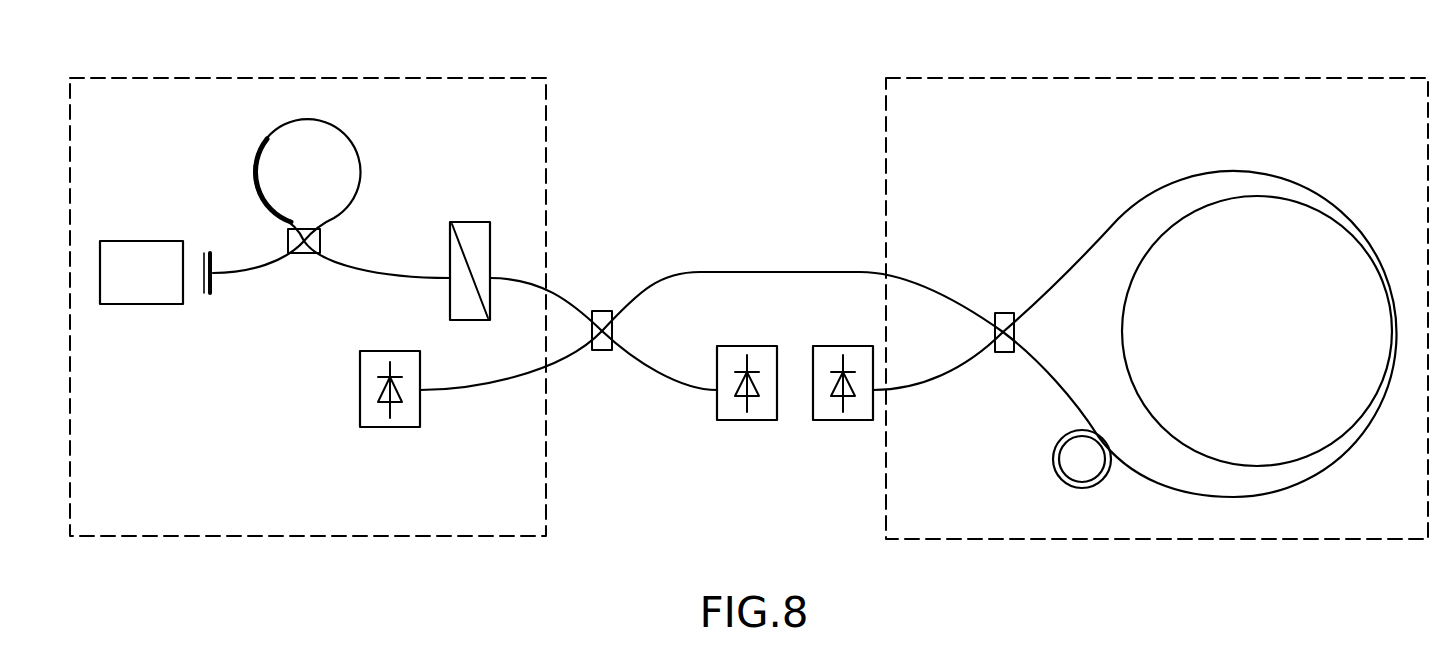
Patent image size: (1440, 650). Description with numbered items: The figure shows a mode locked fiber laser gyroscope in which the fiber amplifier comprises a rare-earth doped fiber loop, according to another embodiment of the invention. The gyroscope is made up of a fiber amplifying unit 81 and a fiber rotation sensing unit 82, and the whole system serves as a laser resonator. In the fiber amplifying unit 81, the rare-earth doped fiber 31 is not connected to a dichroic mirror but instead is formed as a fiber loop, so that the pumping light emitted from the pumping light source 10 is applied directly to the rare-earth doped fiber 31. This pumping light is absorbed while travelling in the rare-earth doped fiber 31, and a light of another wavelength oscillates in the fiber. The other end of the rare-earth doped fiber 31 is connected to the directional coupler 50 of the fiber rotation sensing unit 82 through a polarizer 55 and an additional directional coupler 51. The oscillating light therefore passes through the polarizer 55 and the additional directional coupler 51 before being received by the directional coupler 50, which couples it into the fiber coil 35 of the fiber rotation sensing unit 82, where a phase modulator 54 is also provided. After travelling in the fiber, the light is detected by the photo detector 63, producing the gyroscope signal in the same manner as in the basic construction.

The fiber amplifying unit 81 is at (341, 105).
The fiber rotation sensing unit 82 is at (1198, 105).
The pumping light source 10 is at (156, 285).
The rare-earth doped fiber 31 is at (331, 198).
The polarizer 55 is at (473, 231).
The additional directional coupler 51 is at (607, 318).
The photo detector 63 is at (364, 420).
The directional coupler 50 is at (1009, 322).
The fiber coil 35 is at (1236, 355).
The phase modulator 54 is at (1054, 466).